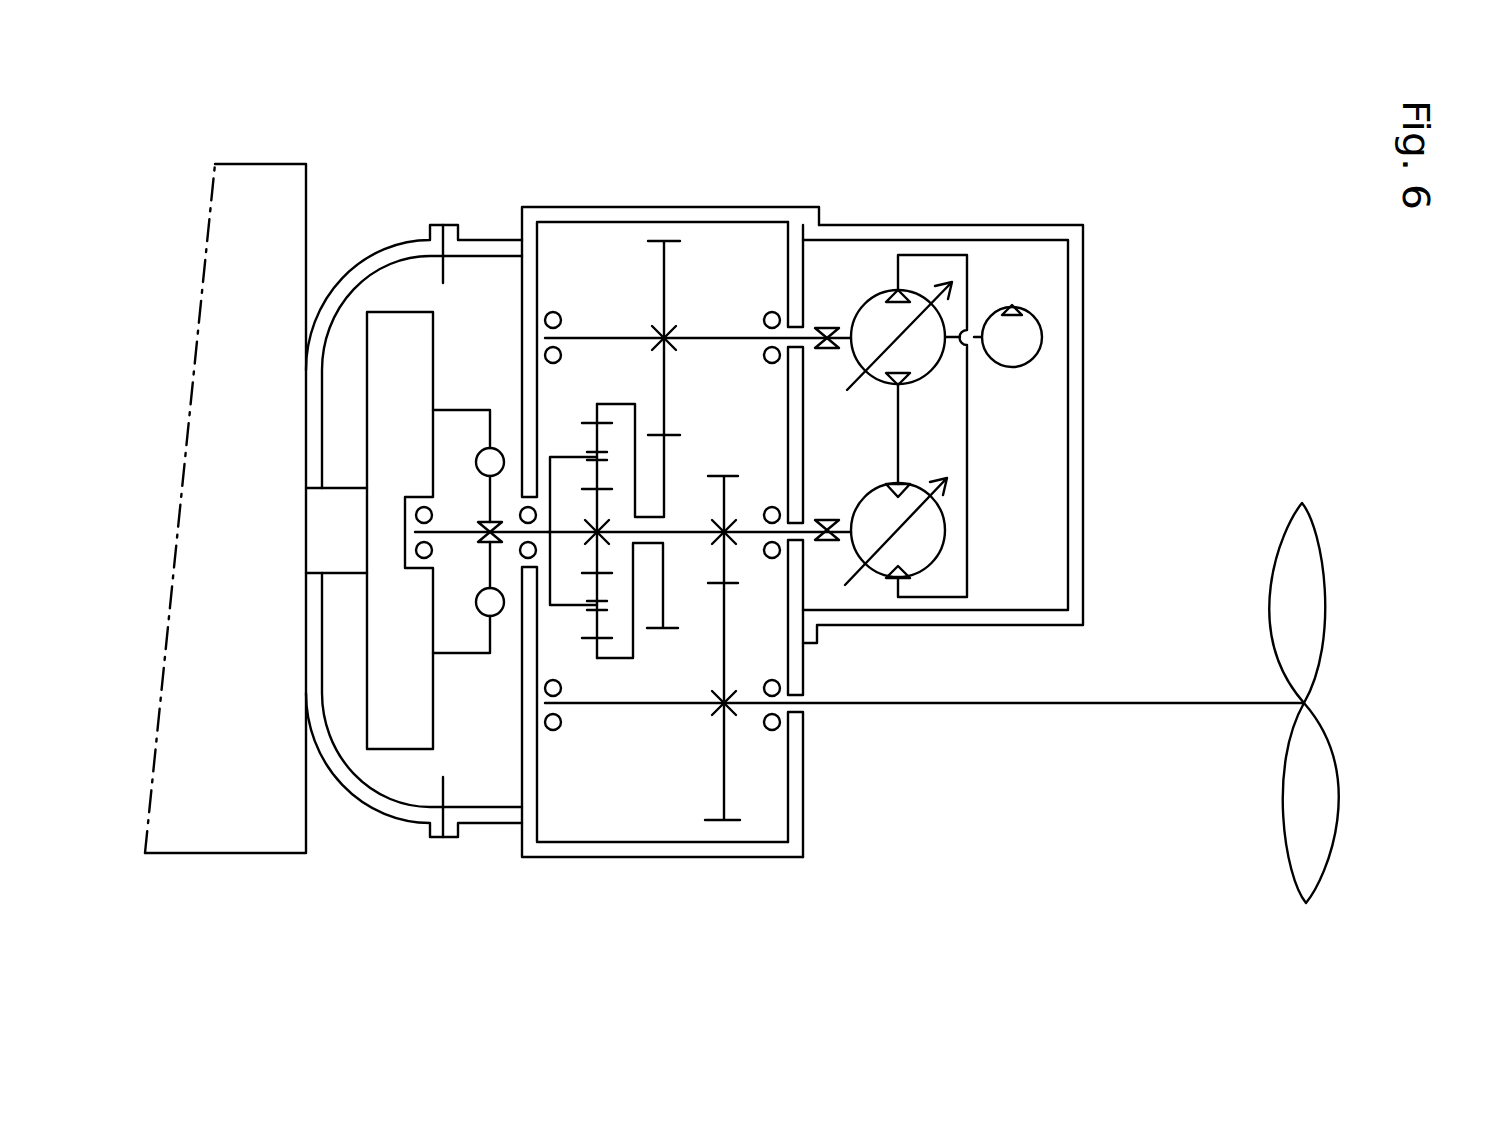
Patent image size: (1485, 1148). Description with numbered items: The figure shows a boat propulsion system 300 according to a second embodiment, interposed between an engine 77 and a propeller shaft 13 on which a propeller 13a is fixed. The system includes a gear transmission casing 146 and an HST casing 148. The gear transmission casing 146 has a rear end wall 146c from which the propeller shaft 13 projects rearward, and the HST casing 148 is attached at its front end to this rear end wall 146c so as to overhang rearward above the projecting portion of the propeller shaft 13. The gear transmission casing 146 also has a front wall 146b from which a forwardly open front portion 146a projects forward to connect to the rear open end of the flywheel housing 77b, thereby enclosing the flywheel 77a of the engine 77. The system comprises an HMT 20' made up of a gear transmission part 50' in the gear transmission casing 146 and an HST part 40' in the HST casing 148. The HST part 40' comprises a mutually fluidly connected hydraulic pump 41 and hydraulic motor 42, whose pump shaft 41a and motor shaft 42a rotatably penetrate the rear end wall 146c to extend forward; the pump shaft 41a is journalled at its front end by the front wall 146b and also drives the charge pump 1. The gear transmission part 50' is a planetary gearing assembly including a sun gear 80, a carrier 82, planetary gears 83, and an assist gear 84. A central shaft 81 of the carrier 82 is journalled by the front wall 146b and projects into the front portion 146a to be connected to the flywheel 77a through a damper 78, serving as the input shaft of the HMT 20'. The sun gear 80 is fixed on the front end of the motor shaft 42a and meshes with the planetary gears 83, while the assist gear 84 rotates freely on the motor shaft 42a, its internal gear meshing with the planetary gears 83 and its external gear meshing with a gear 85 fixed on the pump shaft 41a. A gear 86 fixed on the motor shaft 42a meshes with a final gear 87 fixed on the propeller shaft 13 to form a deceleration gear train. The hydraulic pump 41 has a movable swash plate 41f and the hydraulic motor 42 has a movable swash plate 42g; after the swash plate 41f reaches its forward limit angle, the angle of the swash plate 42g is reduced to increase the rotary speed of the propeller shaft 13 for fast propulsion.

The charge pump 1 is at (1042, 362).
The propeller shaft 13 is at (1094, 705).
The propeller 13a is at (1305, 517).
The HMT 20' is at (800, 207).
The HST part 40' is at (1028, 426).
The hydraulic pump 41 is at (884, 290).
The pump shaft 41a is at (605, 338).
The movable swash plate 41f is at (945, 283).
The hydraulic motor 42 is at (946, 527).
The motor shaft 42a is at (747, 534).
The movable swash plate 42g is at (857, 577).
The gear transmission part 50' is at (578, 794).
The engine 77 is at (260, 638).
The flywheel 77a is at (404, 312).
The flywheel housing 77b is at (377, 807).
The damper 78 is at (476, 460).
The sun gear 80 is at (597, 553).
The central shaft 81 is at (457, 532).
The carrier 82 is at (548, 457).
The planetary gear 83 is at (592, 447).
The assist gear 84 is at (617, 658).
The gear 85 is at (663, 280).
The gear 86 is at (733, 476).
The final gear 87 is at (722, 769).
The gear transmission casing 146 is at (797, 800).
The front portion 146a is at (488, 817).
The front wall 146b is at (518, 783).
The rear end wall 146c is at (797, 437).
The HST casing 148 is at (1083, 258).
The boat propulsion system 300 is at (1262, 313).